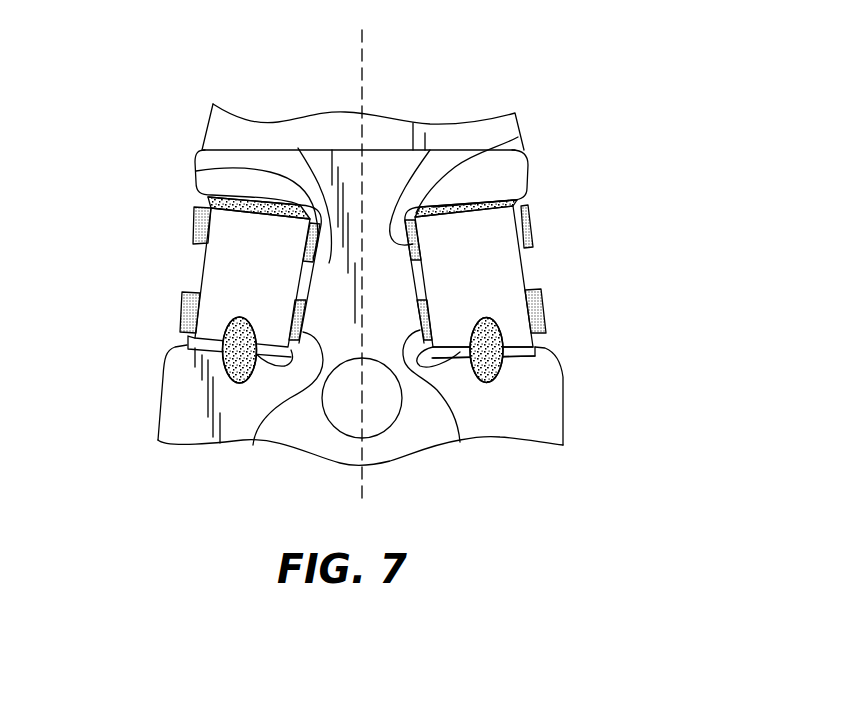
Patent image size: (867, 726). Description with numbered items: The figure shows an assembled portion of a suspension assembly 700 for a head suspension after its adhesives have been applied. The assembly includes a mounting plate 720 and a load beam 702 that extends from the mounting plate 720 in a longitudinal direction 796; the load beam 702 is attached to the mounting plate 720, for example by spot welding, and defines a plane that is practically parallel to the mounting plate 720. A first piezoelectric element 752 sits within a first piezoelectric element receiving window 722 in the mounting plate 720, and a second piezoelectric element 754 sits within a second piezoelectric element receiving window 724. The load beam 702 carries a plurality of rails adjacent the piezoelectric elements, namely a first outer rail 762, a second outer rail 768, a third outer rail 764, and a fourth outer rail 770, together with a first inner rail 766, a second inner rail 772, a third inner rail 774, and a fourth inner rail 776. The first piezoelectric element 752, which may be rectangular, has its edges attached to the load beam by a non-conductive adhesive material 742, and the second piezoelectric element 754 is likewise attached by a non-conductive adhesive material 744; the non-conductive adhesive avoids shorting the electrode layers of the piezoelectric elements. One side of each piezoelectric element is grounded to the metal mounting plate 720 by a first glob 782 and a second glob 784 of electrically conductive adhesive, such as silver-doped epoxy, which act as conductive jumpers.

The suspension assembly 700 is at (632, 102).
The load beam 702 is at (410, 133).
The mounting plate 720 is at (540, 388).
The first piezoelectric element receiving window 722 is at (518, 137).
The second piezoelectric element receiving window 724 is at (196, 171).
The non-conductive adhesive material 742 is at (522, 199).
The non-conductive adhesive material 744 is at (196, 254).
The first piezoelectric element 752 is at (469, 273).
The second piezoelectric element 754 is at (258, 272).
The first outer rail 762 is at (545, 312).
The third outer rail 764 is at (532, 227).
The first inner rail 766 is at (430, 150).
The second outer rail 768 is at (182, 307).
The fourth outer rail 770 is at (196, 223).
The second inner rail 772 is at (298, 148).
The third inner rail 774 is at (254, 443).
The fourth inner rail 776 is at (460, 442).
The first glob of electrically conductive adhesive 782 is at (486, 318).
The second glob of electrically conductive adhesive 784 is at (240, 318).
The longitudinal direction 796 is at (362, 62).